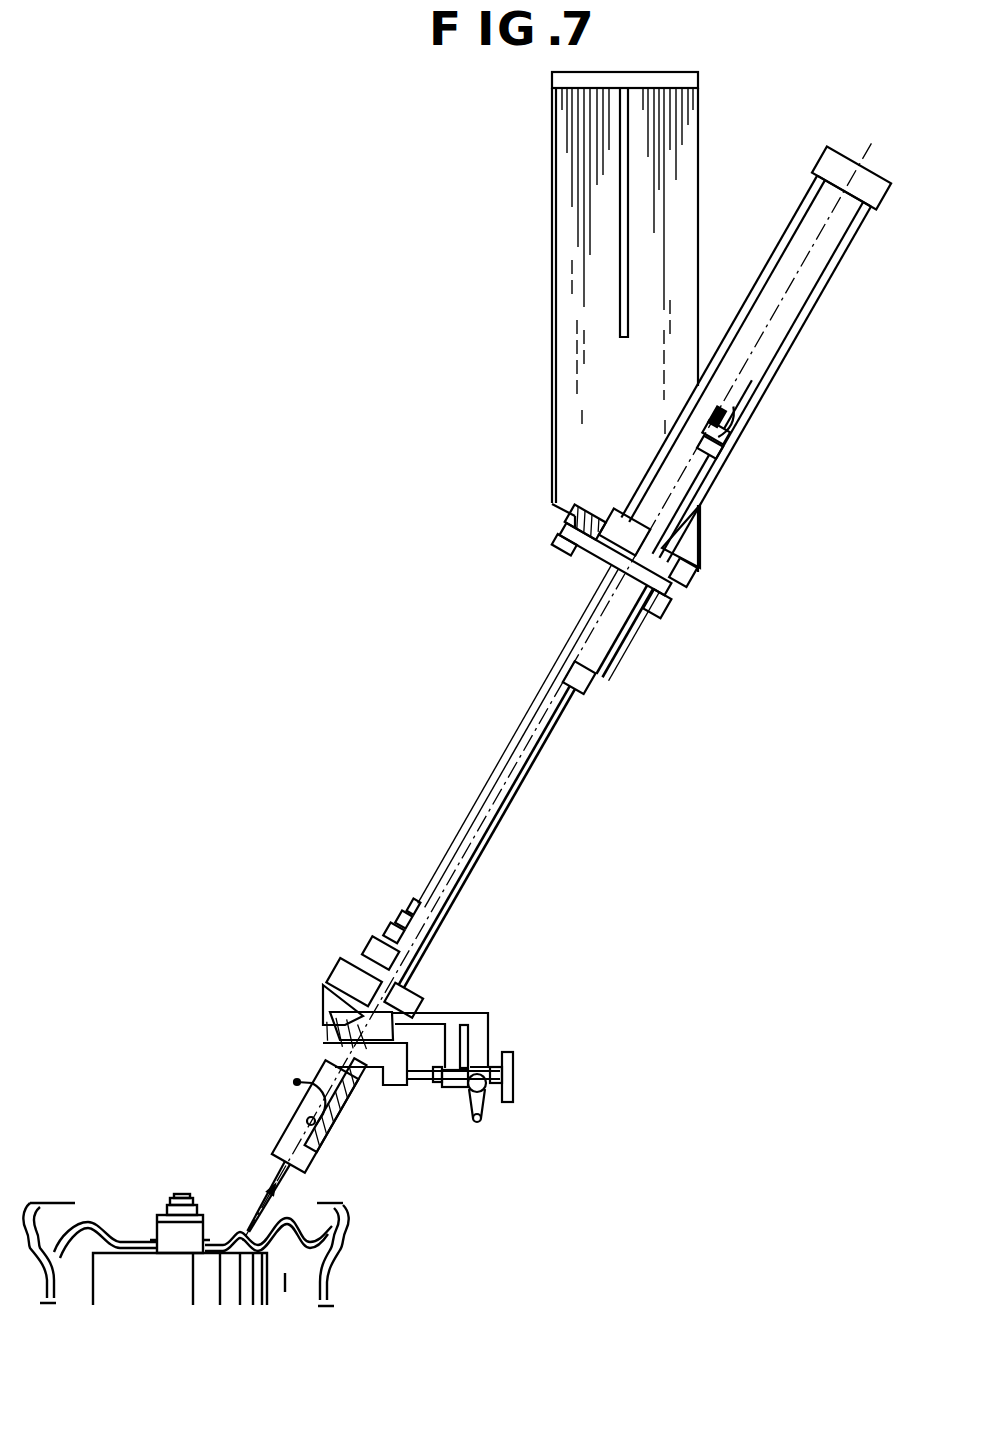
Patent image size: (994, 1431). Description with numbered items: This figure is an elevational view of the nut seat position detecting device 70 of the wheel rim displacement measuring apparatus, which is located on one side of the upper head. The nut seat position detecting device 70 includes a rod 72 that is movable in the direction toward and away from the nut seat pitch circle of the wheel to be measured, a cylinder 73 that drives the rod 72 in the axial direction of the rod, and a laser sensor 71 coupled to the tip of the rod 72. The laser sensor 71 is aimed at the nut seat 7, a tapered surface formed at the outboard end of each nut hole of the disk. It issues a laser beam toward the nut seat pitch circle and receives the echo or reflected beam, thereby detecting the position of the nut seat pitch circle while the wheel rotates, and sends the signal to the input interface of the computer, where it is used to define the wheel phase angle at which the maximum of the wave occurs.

The nut seat 7 is at (234, 1232).
The nut seat position detecting device 70 is at (567, 697).
The laser sensor 71 is at (323, 1158).
The rod 72 is at (482, 836).
The cylinder 73 is at (738, 352).